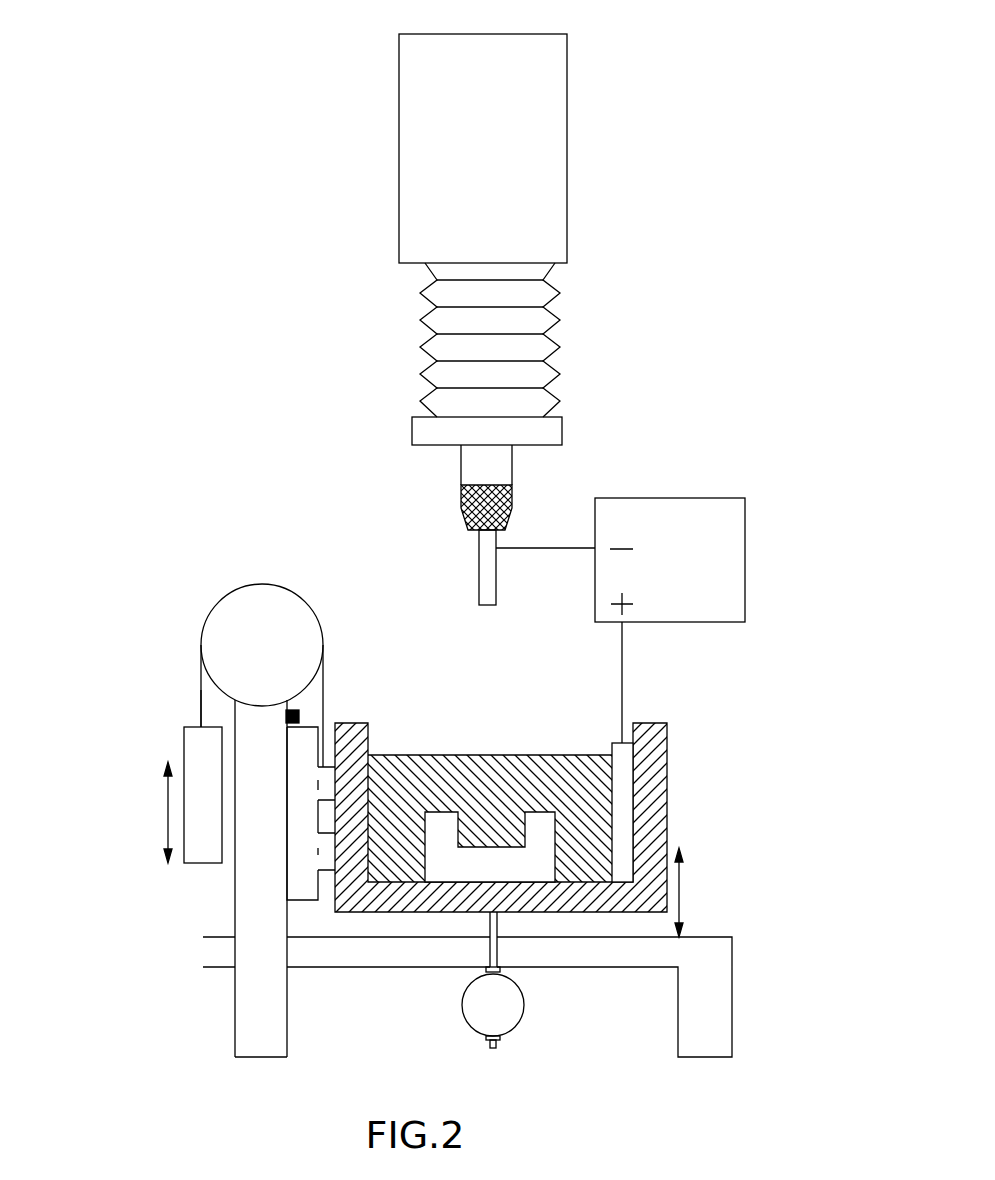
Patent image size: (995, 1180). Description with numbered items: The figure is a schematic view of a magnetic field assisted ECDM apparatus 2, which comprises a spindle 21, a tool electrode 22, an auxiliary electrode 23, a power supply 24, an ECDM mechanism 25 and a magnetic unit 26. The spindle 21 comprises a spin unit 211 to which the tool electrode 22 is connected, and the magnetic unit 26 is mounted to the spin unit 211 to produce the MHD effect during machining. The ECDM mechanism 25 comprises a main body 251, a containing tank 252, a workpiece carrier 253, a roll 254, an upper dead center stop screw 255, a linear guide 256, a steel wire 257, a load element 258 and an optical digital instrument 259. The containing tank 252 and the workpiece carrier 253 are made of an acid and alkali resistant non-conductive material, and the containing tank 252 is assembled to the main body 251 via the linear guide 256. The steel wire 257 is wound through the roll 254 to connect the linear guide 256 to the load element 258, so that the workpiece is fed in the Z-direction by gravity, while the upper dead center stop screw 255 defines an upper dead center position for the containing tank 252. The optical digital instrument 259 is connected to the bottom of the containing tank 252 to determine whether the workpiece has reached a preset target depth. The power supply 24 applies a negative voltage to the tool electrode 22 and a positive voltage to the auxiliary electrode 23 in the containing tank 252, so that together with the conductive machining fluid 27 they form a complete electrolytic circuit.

The magnetic field assisted ECDM apparatus 2 is at (110, 33).
The spindle 21 is at (478, 205).
The spin unit 211 is at (478, 470).
The magnetic unit 26 is at (458, 503).
The tool electrode 22 is at (477, 568).
The power supply 24 is at (685, 523).
The ECDM mechanism 25 is at (178, 612).
The roll 254 is at (278, 653).
The upper dead center stop screw 255 is at (299, 715).
The linear guide 256 is at (298, 755).
The steel wire 257 is at (200, 693).
The load element 258 is at (200, 743).
The workpiece carrier 253 is at (443, 830).
The conductive machining fluid 27 is at (613, 762).
The auxiliary electrode 23 is at (622, 797).
The containing tank 252 is at (652, 832).
The main body 251 is at (712, 953).
The optical digital instrument 259 is at (500, 1006).